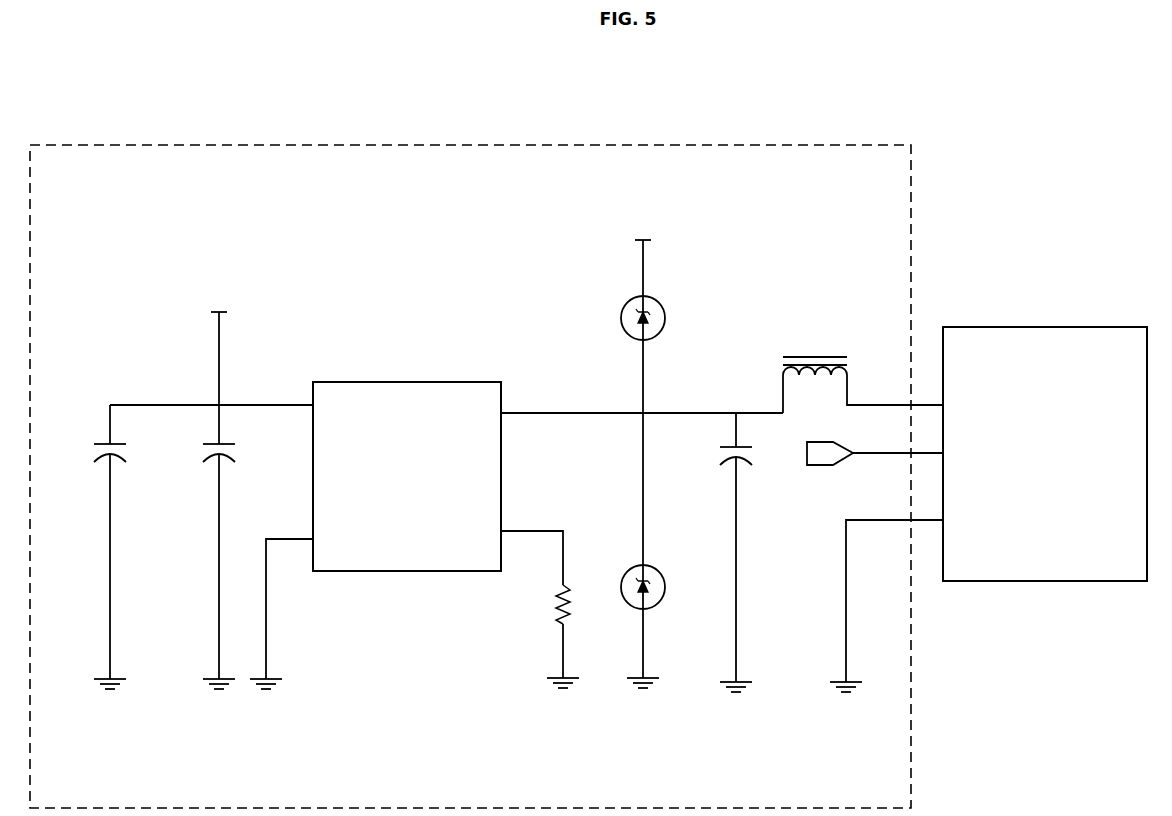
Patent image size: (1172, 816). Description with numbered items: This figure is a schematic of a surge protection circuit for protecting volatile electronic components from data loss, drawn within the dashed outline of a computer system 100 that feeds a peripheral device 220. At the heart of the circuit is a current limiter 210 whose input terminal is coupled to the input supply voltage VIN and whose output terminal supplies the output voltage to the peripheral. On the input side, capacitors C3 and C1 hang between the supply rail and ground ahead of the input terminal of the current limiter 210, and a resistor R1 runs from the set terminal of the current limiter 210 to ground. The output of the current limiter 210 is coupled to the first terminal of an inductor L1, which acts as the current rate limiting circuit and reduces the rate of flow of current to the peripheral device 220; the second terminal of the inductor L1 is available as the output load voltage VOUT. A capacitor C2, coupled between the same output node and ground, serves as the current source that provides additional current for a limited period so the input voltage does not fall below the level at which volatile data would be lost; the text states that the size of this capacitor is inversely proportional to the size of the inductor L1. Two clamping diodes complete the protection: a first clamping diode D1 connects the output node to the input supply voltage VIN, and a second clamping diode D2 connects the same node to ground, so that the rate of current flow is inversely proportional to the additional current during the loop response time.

The computer system 100 is at (550, 210).
The current limiter 210 is at (393, 517).
The peripheral device 220 is at (1030, 494).
The capacitor C1 is at (199, 565).
The capacitor C2 is at (722, 563).
The capacitor C3 is at (91, 547).
The diode D1 is at (625, 318).
The diode D2 is at (630, 587).
The resistor R1 is at (541, 626).
The inductor L1 is at (863, 368).